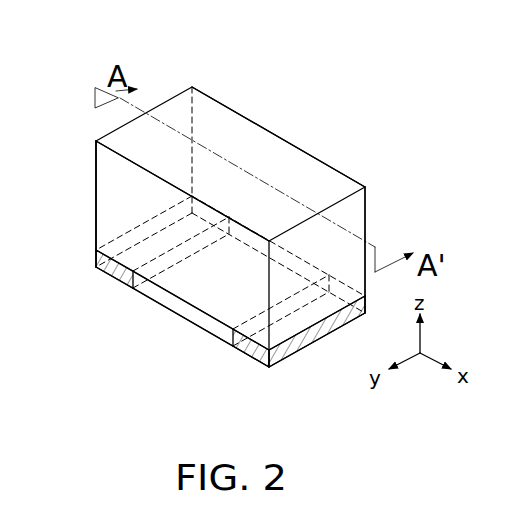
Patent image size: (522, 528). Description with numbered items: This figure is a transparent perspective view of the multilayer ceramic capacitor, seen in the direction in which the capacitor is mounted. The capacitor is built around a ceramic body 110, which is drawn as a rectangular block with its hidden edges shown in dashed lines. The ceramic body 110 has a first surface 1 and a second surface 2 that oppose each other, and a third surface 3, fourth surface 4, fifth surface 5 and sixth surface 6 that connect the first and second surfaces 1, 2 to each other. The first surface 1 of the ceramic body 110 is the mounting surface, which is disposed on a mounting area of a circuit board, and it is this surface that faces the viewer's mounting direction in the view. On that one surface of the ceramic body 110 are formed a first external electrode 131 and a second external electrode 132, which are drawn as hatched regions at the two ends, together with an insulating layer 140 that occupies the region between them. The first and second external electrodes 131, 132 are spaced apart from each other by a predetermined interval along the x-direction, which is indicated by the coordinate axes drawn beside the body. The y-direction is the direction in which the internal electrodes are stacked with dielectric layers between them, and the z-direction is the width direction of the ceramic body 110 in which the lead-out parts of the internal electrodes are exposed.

The first surface 1 is at (217, 314).
The second surface 2 is at (214, 128).
The third surface 3 is at (110, 175).
The fourth surface 4 is at (368, 211).
The fifth surface 5 is at (94, 230).
The sixth surface 6 is at (294, 144).
The ceramic body 110 is at (177, 103).
The first external electrode 131 is at (98, 271).
The second external electrode 132 is at (255, 357).
The insulating layer 140 is at (165, 300).